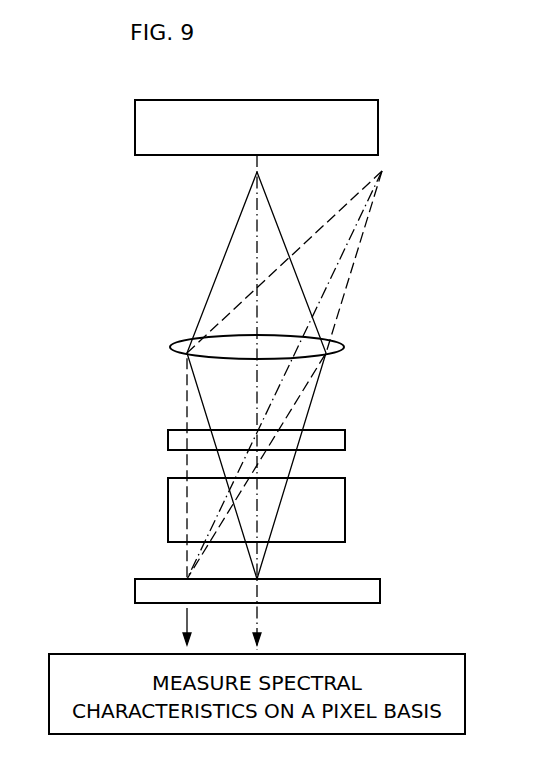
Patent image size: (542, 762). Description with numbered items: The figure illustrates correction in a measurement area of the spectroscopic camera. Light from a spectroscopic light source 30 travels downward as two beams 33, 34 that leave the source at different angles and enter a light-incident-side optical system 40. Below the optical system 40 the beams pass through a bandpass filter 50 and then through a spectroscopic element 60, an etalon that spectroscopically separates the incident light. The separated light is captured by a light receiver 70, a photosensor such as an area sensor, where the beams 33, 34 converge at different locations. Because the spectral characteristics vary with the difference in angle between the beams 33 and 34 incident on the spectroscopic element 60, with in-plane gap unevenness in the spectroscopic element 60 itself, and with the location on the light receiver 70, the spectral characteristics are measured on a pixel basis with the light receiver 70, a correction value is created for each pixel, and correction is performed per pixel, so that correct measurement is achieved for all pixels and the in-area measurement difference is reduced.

The spectroscopic light source 30 is at (378, 127).
The beam 33 is at (257, 254).
The beam 34 is at (335, 270).
The light-incident-side optical system 40 is at (343, 343).
The bandpass filter 50 is at (345, 436).
The spectroscopic element 60 is at (345, 505).
The light receiver 70 is at (380, 587).